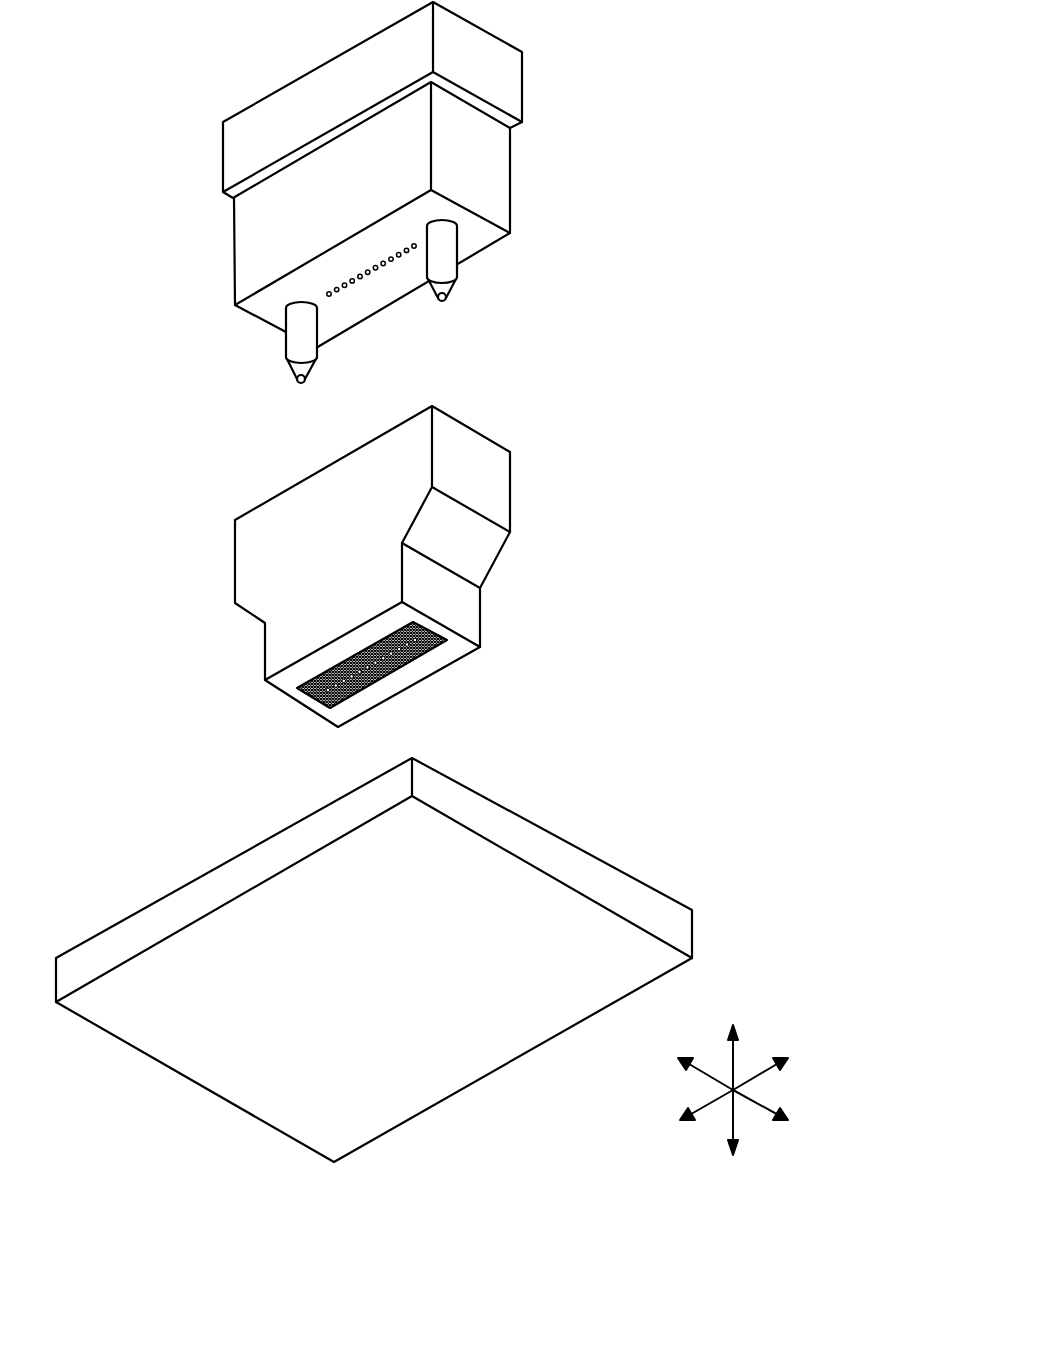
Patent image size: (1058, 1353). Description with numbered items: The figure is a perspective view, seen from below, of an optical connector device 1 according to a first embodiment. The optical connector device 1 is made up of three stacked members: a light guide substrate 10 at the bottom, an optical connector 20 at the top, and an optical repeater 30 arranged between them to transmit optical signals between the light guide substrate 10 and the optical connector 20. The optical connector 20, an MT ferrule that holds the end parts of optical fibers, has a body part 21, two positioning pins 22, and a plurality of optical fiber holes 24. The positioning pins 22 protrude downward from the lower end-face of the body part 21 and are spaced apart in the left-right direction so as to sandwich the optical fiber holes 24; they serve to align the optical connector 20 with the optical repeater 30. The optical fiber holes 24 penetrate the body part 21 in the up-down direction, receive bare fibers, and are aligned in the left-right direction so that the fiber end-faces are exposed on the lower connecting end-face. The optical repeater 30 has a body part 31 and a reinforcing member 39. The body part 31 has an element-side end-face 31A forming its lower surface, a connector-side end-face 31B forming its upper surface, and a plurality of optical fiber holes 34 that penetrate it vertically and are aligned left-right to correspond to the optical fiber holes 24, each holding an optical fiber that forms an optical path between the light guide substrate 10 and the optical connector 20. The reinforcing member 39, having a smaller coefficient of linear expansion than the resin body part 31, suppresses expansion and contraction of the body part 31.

The optical connector device 1 is at (738, 322).
The light guide substrate 10 is at (639, 832).
The optical connector 20 is at (580, 251).
The body part 21 is at (510, 167).
The positioning pins 22 is at (318, 353).
The optical fiber holes 24 is at (392, 265).
The optical repeater 30 is at (586, 514).
The body part 31 is at (385, 566).
The element-side end-face 31A is at (457, 648).
The connector-side end-face 31B is at (297, 480).
The optical fiber holes 34 is at (377, 678).
The reinforcing member 39 is at (402, 663).